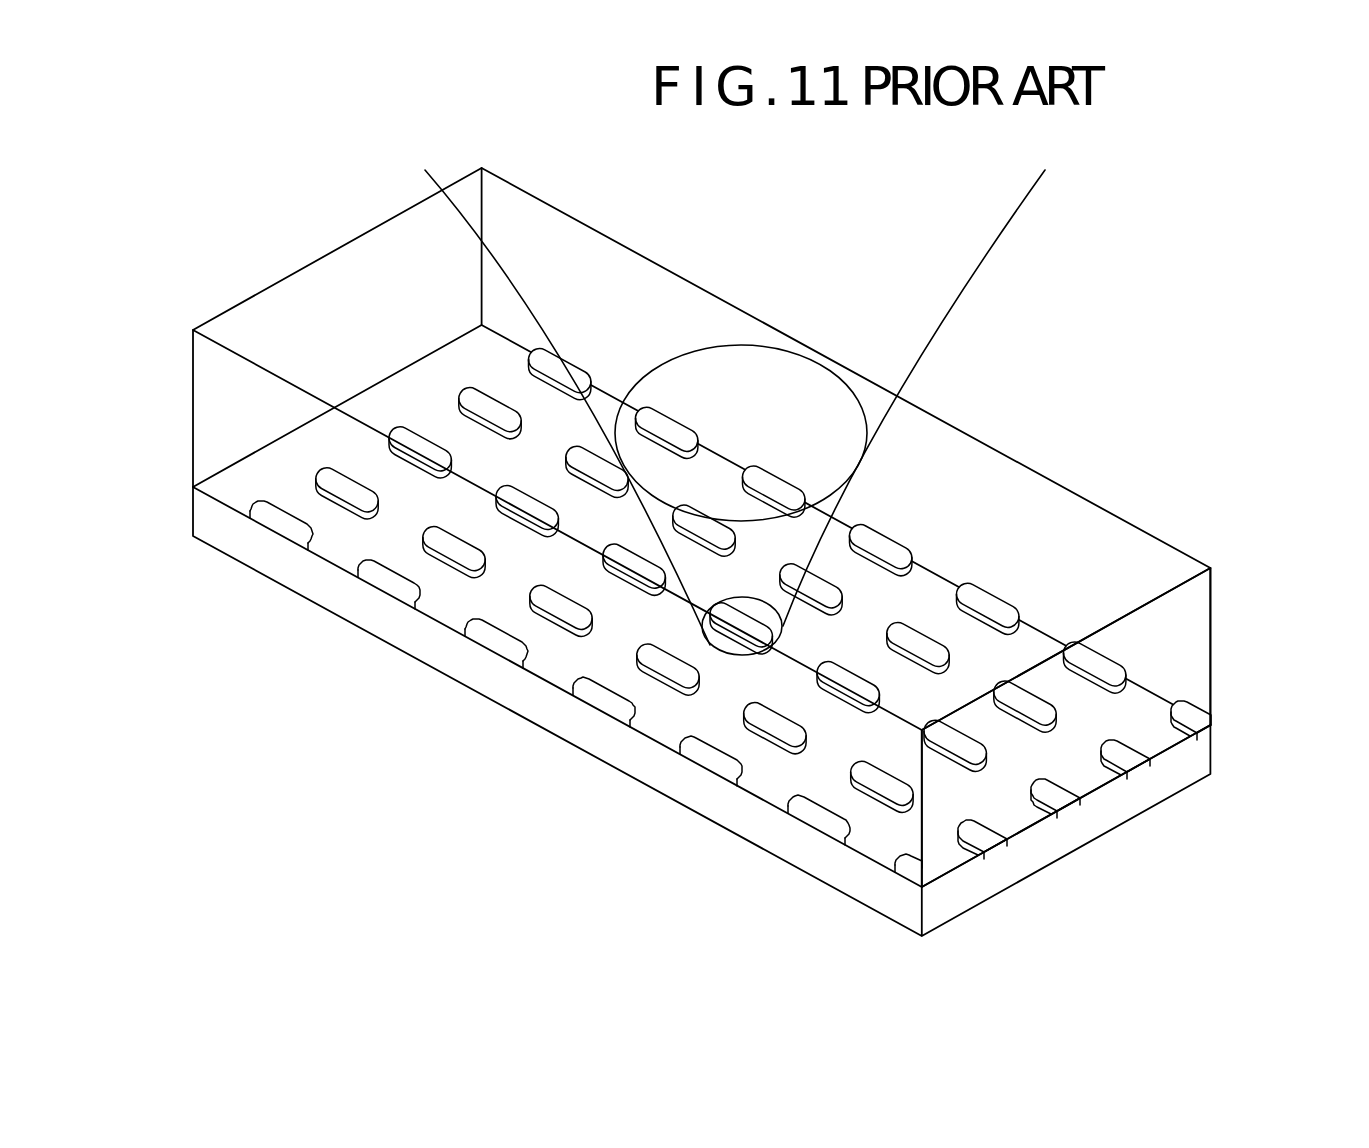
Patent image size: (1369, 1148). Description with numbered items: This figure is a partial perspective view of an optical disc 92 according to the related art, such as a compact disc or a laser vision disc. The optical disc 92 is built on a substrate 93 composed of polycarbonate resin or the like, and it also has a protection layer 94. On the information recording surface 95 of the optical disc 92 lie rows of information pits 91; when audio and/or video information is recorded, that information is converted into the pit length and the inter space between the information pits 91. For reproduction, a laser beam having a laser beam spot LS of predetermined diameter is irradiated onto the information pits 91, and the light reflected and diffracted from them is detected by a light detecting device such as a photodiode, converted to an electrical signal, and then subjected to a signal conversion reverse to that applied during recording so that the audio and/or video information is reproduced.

The information pits 91 is at (909, 622).
The optical disc 92 is at (745, 527).
The substrate 93 is at (1108, 523).
The protection layer 94 is at (1192, 762).
The information recording surface 95 is at (1135, 707).
The laser beam spot LS is at (745, 656).